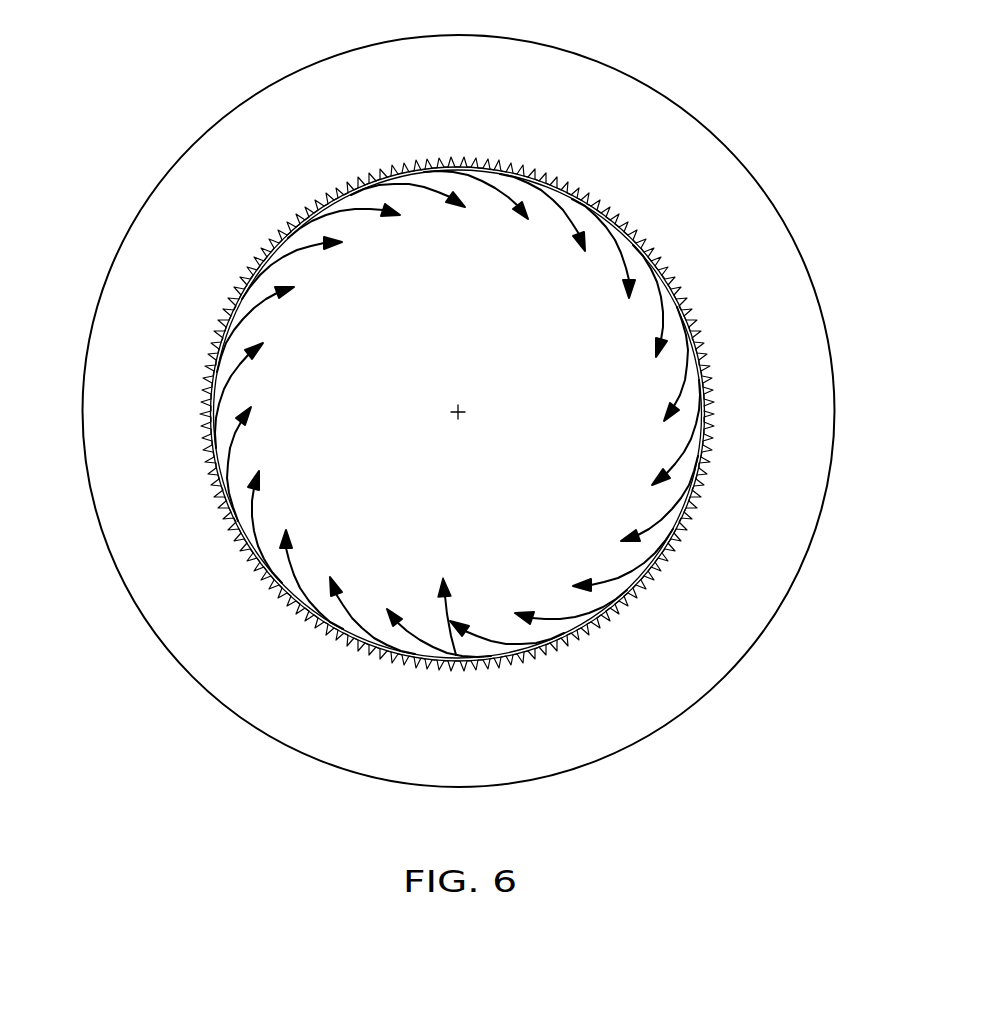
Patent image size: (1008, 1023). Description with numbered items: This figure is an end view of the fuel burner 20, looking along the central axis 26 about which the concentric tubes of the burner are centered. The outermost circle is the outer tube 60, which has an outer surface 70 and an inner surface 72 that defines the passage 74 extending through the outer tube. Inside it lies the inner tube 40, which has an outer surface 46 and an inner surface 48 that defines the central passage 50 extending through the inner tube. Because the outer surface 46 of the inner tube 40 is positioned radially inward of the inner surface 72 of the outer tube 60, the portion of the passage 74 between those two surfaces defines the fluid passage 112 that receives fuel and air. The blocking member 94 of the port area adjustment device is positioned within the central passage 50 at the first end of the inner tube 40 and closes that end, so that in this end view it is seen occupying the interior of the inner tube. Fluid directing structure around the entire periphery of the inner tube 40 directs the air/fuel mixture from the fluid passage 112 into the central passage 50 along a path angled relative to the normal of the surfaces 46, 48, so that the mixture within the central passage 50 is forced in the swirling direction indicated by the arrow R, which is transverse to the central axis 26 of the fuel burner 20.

The fuel burner 20 is at (184, 46).
The outer tube 60 is at (137, 180).
The outer surface 70 is at (93, 313).
The inner surface 72 is at (85, 365).
The passage 74 is at (106, 418).
The fluid passage 112 is at (820, 387).
The inner tube 40 is at (688, 277).
The outer surface 46 is at (703, 369).
The inner surface 48 is at (690, 394).
The central passage 50 is at (461, 656).
The blocking member 94 is at (480, 327).
The central axis 26 is at (466, 410).
The arrow R is at (368, 207).